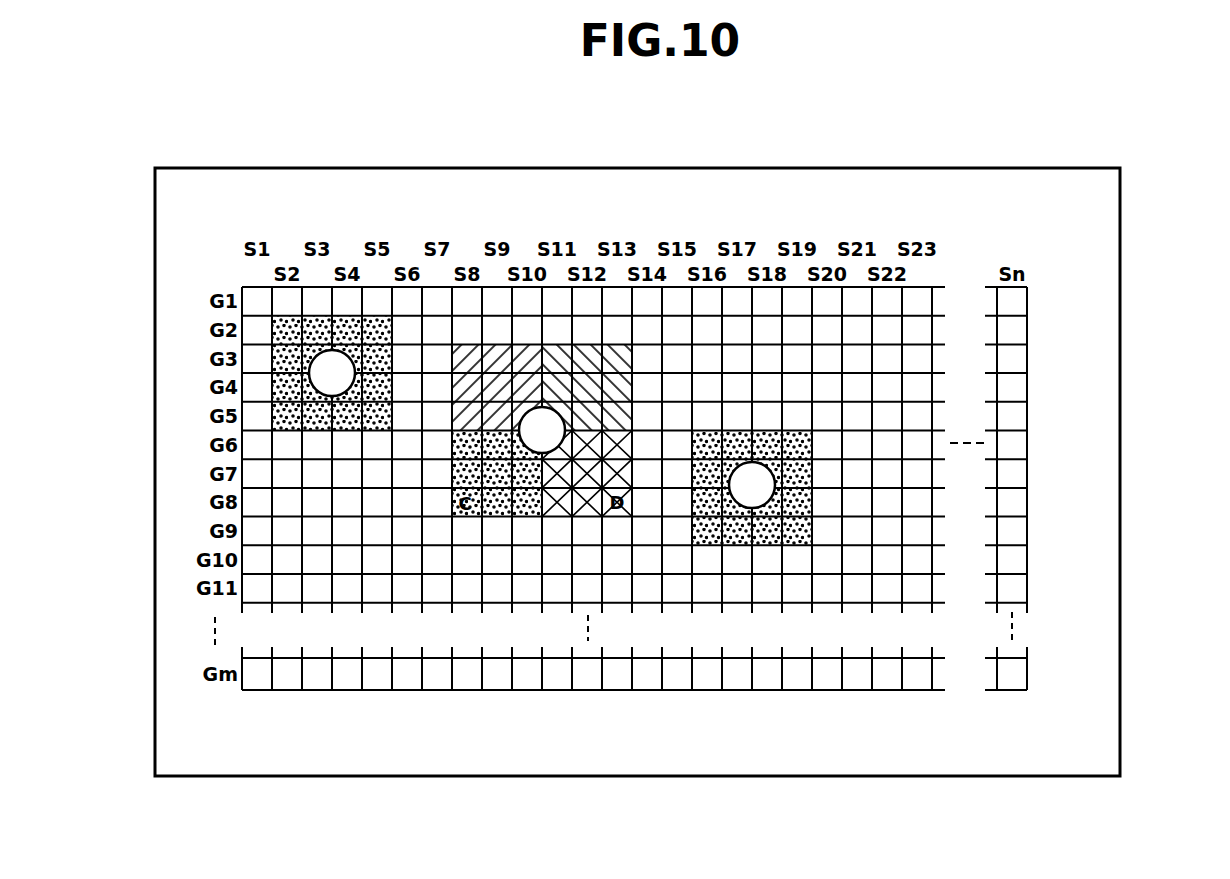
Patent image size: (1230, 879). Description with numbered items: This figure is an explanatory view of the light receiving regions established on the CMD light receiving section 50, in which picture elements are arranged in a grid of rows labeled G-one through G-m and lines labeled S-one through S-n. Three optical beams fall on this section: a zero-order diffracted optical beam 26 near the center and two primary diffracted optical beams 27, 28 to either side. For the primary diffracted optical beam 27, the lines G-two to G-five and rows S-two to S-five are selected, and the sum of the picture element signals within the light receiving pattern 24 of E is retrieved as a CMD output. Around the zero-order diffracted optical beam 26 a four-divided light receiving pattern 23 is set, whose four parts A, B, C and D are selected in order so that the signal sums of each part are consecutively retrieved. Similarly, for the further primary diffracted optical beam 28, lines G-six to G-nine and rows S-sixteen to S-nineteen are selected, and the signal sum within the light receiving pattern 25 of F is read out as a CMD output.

The four-divided light receiving pattern 23 is at (614, 343).
The light receiving pattern 24 is at (268, 325).
The light receiving pattern 25 is at (815, 505).
The zero-order diffracted optical beam 26 is at (540, 453).
The primary diffracted optical beam 27 is at (325, 396).
The primary diffracted optical beam 28 is at (770, 467).
The CMD light receiving section 50 is at (1120, 732).